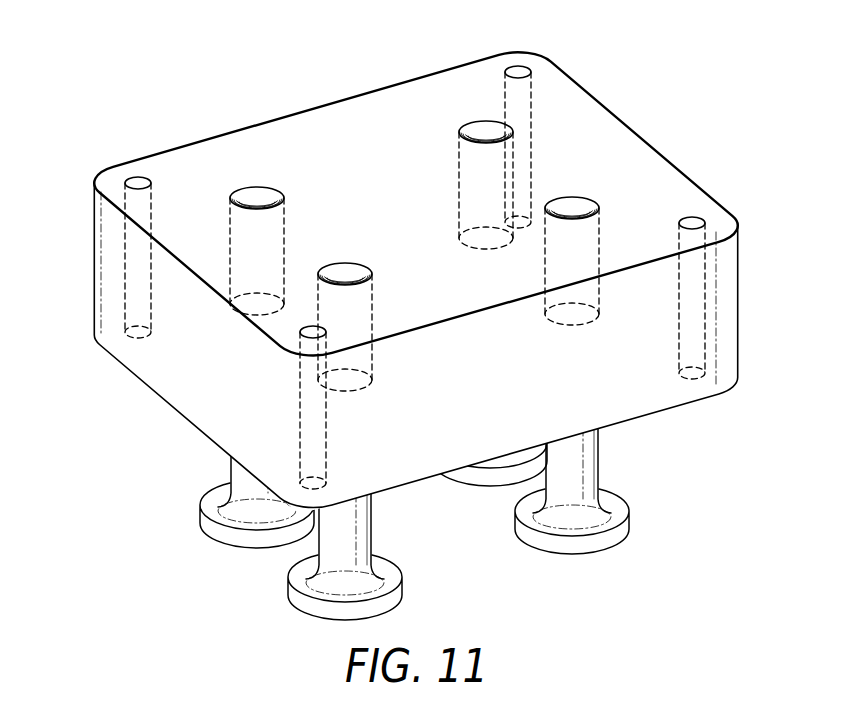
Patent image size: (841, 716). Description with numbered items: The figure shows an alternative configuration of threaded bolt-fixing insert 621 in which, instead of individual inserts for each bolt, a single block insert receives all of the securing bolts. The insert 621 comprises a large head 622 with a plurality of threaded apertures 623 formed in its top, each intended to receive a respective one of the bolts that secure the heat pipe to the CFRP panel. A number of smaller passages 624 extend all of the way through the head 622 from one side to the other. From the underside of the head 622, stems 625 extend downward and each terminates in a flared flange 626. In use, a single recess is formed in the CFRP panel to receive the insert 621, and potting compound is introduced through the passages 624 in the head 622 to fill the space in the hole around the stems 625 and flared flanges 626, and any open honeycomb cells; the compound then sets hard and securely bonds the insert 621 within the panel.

The insert 621 is at (84, 93).
The head 622 is at (739, 286).
The threaded apertures 623 is at (258, 193).
The passages 624 is at (519, 67).
The stems 625 is at (233, 476).
The flared flanges 626 is at (201, 510).